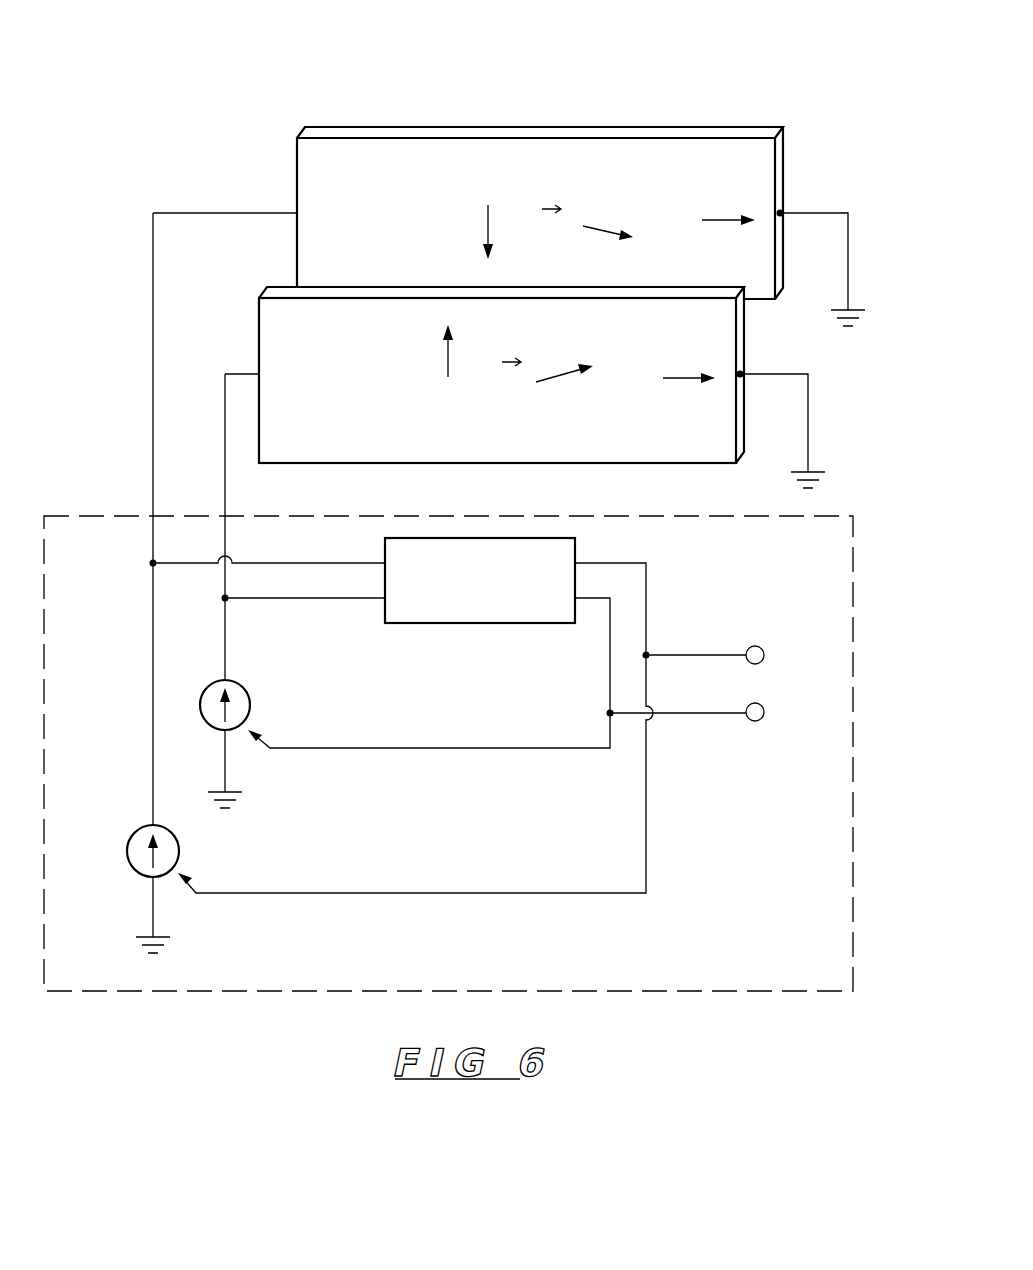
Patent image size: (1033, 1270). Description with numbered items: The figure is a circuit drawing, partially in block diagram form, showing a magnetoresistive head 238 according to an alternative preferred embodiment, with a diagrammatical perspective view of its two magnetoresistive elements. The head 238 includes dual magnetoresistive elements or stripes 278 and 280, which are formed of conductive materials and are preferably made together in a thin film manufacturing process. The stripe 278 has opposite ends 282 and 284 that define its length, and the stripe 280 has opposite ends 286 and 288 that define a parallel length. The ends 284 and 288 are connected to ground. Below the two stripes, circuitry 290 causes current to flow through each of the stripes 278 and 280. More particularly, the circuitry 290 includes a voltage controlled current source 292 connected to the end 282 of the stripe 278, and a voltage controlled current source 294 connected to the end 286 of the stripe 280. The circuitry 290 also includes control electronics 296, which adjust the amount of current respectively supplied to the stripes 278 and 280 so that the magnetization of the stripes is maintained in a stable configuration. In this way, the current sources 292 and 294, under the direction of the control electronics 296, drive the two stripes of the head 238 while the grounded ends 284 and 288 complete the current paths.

The magnetoresistive head 238 is at (636, 63).
The magnetoresistive element 278 is at (418, 170).
The magnetoresistive element 280 is at (580, 432).
The end 282 is at (297, 165).
The end 284 is at (779, 166).
The end 286 is at (259, 328).
The end 288 is at (740, 342).
The circuitry 290 is at (727, 993).
The voltage controlled current source 292 is at (133, 835).
The voltage controlled current source 294 is at (205, 690).
The control electronics 296 is at (460, 623).